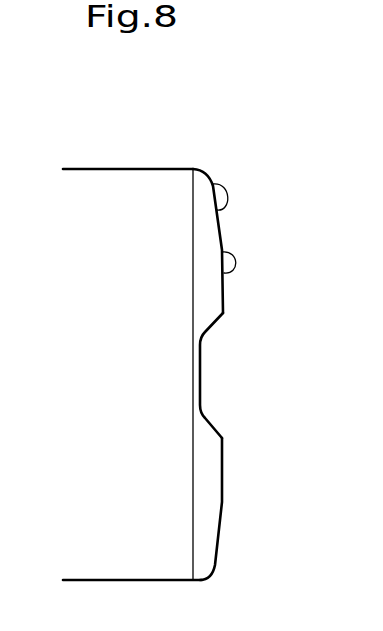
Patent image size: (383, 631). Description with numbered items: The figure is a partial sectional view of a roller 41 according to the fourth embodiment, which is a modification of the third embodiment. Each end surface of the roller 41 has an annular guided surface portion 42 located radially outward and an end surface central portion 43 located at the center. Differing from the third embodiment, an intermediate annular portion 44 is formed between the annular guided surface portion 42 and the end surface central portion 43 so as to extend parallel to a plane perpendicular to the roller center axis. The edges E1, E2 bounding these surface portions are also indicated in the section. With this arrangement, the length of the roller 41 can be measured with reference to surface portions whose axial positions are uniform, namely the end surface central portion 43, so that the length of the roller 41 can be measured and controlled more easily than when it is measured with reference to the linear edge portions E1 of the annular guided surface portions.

The roller 41 is at (140, 190).
The annular guided surface portion 42 is at (220, 218).
The end surface central portion 43 is at (200, 376).
The intermediate annular portion 44 is at (222, 296).
The edge E1 is at (224, 273).
The second edge portion E2 is at (222, 203).